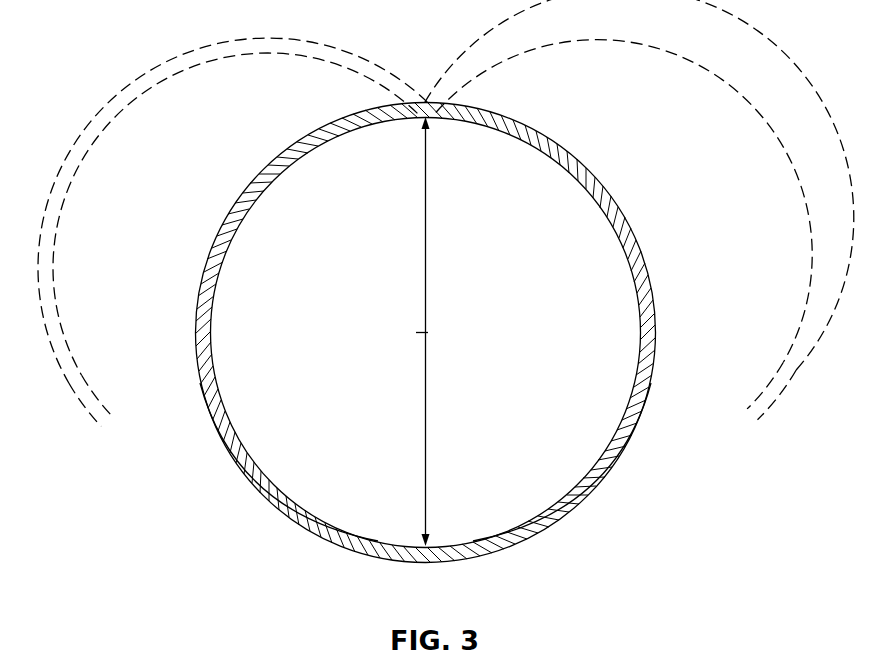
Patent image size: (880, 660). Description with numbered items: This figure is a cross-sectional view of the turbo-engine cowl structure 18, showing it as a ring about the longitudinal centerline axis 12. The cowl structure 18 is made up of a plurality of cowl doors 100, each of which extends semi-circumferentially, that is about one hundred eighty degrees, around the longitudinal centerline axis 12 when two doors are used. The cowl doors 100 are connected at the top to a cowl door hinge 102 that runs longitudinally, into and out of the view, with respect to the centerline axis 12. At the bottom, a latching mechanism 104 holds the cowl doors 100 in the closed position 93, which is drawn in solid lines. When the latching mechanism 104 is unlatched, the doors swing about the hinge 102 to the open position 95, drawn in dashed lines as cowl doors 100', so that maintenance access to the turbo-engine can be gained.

The longitudinal centerline axis 12 is at (433, 332).
The turbo-engine cowl structure 18 is at (553, 530).
The closed position 93 is at (238, 473).
The open position 95 is at (53, 370).
The cowl door 100 is at (387, 333).
The cowl door in open position 100' is at (438, 191).
The cowl door hinge 102 is at (420, 128).
The latching mechanism 104 is at (423, 535).